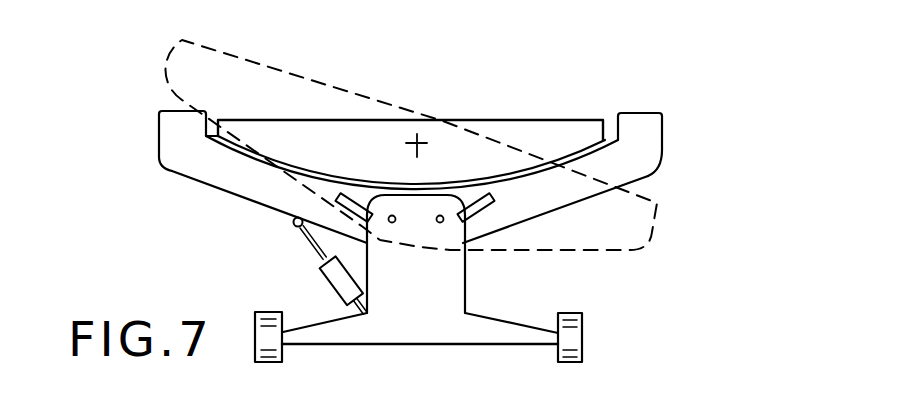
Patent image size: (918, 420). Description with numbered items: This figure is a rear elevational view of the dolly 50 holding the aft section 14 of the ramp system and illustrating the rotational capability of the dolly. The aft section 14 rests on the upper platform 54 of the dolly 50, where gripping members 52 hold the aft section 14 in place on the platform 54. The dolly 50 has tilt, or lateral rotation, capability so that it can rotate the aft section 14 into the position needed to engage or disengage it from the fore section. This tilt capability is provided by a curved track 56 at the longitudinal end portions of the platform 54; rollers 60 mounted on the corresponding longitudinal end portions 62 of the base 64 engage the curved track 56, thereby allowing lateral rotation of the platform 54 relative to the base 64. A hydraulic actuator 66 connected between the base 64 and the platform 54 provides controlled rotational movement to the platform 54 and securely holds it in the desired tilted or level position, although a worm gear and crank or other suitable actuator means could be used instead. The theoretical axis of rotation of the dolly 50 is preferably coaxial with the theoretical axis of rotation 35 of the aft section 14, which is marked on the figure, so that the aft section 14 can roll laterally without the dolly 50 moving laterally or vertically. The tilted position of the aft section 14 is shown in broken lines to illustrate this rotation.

The aft section 14 is at (507, 120).
The theoretical axis of rotation 35 is at (418, 142).
The dolly 50 is at (466, 282).
The gripping members 52 is at (663, 130).
The upper platform 54 is at (660, 162).
The curved track 56 is at (160, 162).
The rollers 60 is at (447, 220).
The longitudinal end portions 62 is at (328, 258).
The base 64 is at (430, 345).
The hydraulic actuator 66 is at (350, 303).